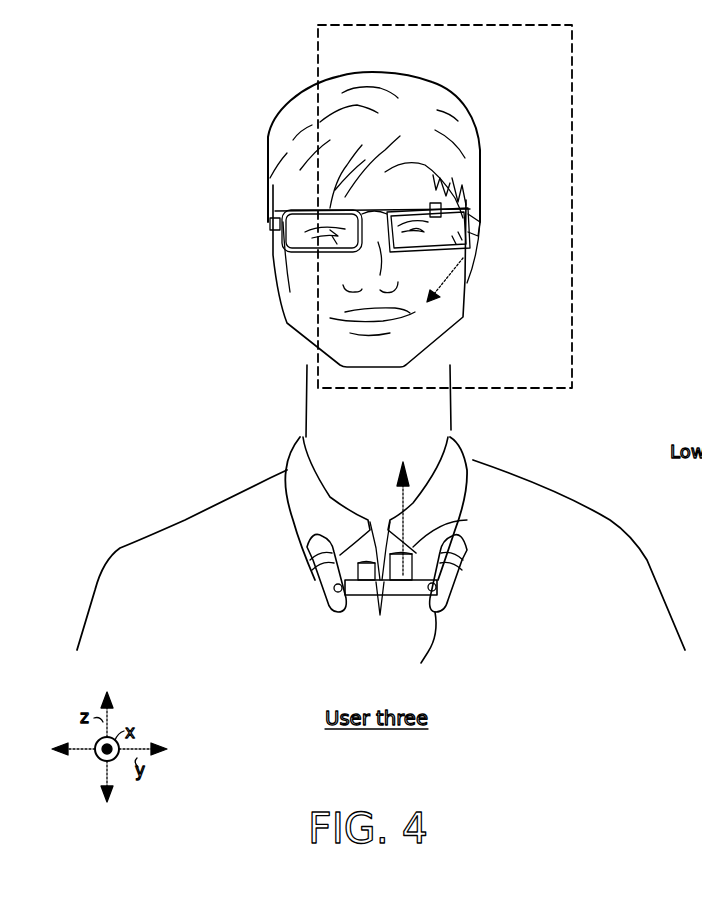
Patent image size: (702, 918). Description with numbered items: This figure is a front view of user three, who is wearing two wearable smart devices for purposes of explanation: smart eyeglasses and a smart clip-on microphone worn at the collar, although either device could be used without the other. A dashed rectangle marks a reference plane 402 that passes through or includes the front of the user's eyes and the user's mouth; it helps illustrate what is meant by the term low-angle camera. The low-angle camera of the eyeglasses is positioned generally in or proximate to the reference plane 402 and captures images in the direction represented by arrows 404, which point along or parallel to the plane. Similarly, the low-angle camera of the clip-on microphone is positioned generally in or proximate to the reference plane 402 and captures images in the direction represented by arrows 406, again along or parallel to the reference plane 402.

The reference plane 402 is at (572, 310).
The arrows 404 is at (456, 270).
The arrows 406 is at (402, 499).